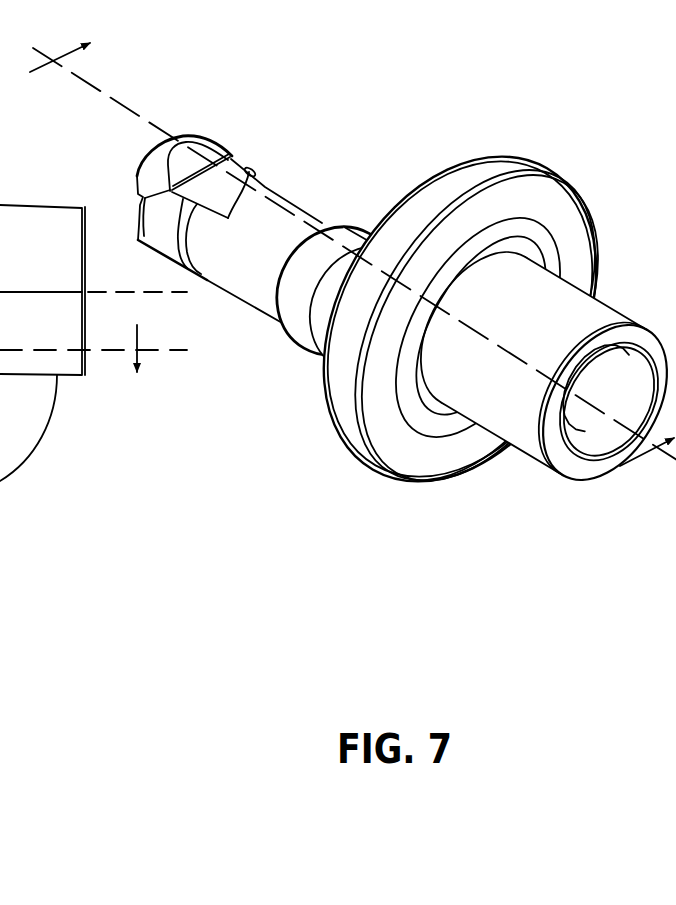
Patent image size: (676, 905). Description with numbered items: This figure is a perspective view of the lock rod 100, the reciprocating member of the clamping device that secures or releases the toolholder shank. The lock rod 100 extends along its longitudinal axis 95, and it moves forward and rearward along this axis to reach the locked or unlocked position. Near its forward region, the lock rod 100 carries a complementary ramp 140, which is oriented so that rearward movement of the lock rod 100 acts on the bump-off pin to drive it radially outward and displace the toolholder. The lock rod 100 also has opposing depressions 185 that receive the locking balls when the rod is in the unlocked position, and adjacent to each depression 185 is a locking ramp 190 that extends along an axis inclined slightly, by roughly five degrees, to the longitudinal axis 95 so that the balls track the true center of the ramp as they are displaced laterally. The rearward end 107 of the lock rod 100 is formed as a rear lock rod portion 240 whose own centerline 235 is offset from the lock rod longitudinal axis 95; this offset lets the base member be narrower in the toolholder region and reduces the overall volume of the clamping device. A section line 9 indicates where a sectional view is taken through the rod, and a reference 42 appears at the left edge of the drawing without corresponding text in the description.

The lock rod 100 is at (359, 286).
The rearward end 107 is at (587, 313).
The rear lock rod portion 240 is at (510, 418).
The complementary ramp 140 is at (188, 157).
The depression 185 is at (148, 222).
The locking ramp 190 is at (140, 232).
The housing member 42 is at (110, 292).
The rear portion centerline 235 is at (168, 293).
The longitudinal axis 95 is at (167, 350).
The section line 9- 9 is at (353, 243).